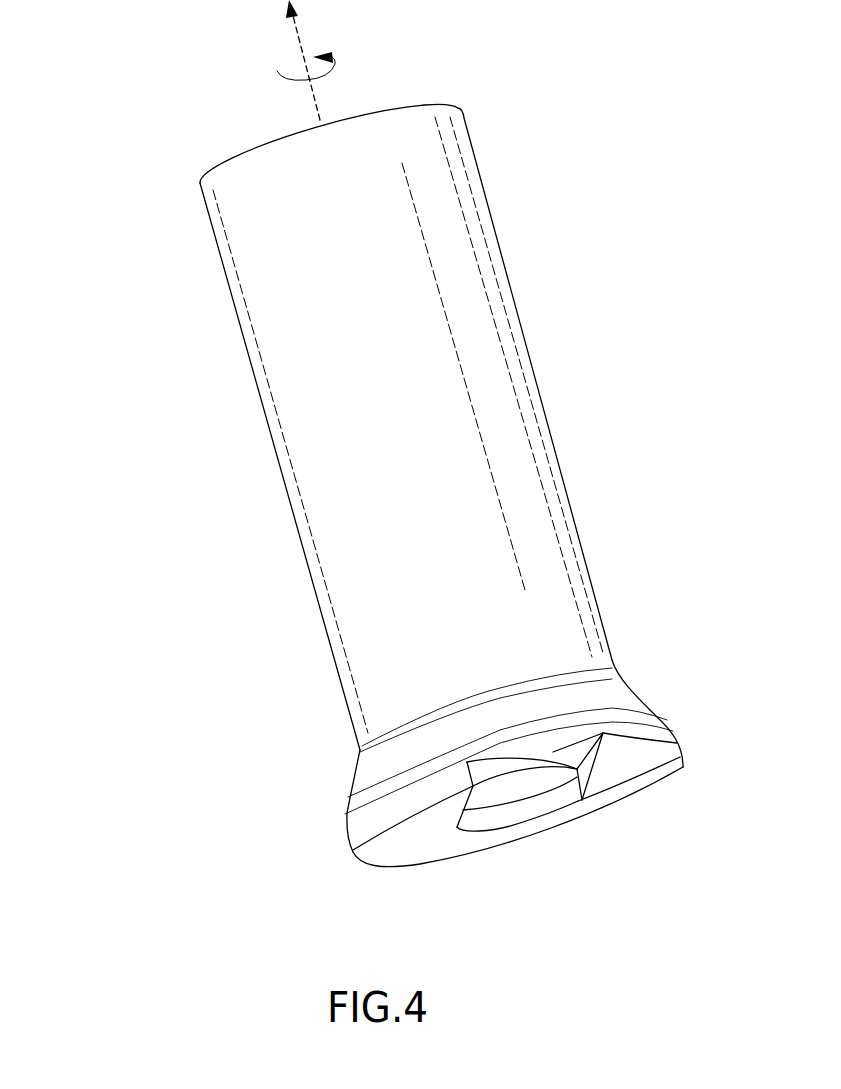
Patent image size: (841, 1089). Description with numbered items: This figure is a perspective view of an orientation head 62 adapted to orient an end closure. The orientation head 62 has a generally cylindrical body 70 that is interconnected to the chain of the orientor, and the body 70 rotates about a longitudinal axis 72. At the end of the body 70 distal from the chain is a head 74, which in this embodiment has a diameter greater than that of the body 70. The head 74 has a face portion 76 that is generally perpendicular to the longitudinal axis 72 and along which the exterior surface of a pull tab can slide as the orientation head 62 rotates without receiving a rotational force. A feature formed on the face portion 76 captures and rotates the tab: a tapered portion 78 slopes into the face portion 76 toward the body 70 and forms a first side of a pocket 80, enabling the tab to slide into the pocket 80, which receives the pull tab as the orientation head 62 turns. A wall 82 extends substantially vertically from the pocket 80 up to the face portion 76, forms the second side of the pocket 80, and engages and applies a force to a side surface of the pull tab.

The orientation head 62 is at (151, 399).
The body 70 is at (323, 548).
The longitudinal axis 72 is at (298, 36).
The head 74 is at (353, 825).
The face portion 76 is at (397, 847).
The tapered portion 78 is at (653, 755).
The pocket 80 is at (603, 733).
The wall 82 is at (467, 776).